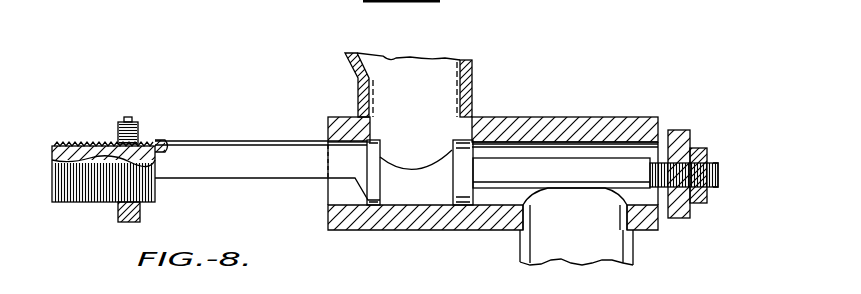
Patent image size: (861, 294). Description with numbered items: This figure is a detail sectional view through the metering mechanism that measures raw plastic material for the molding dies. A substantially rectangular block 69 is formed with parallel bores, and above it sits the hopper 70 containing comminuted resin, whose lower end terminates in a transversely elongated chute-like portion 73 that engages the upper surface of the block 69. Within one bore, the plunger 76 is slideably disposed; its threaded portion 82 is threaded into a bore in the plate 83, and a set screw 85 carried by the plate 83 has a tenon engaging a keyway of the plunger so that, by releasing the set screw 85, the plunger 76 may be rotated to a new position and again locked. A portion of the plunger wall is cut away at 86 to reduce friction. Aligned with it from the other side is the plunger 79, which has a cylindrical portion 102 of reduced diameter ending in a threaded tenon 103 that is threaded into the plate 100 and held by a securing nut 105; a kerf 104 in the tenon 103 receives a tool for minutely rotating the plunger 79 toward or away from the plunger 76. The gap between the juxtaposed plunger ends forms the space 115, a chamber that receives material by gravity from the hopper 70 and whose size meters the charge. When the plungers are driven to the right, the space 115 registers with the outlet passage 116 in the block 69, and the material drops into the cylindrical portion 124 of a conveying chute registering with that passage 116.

The block 69 is at (547, 124).
The hopper 70 is at (388, 62).
The chute-like portion 73 is at (358, 98).
The plunger 76 is at (243, 130).
The plunger 79 is at (483, 127).
The threaded portion 82 is at (84, 142).
The plate 83 is at (120, 211).
The set screw 85 is at (133, 124).
The cut-away portion 86 is at (278, 183).
The plate 100 is at (692, 138).
The cylindrical portion 102 is at (610, 165).
The threaded tenon 103 is at (718, 166).
The kerf 104 is at (718, 183).
The securing nut 105 is at (700, 204).
The space 115 is at (437, 180).
The outlet passage 116 is at (547, 222).
The cylindrical portion 124 is at (633, 250).